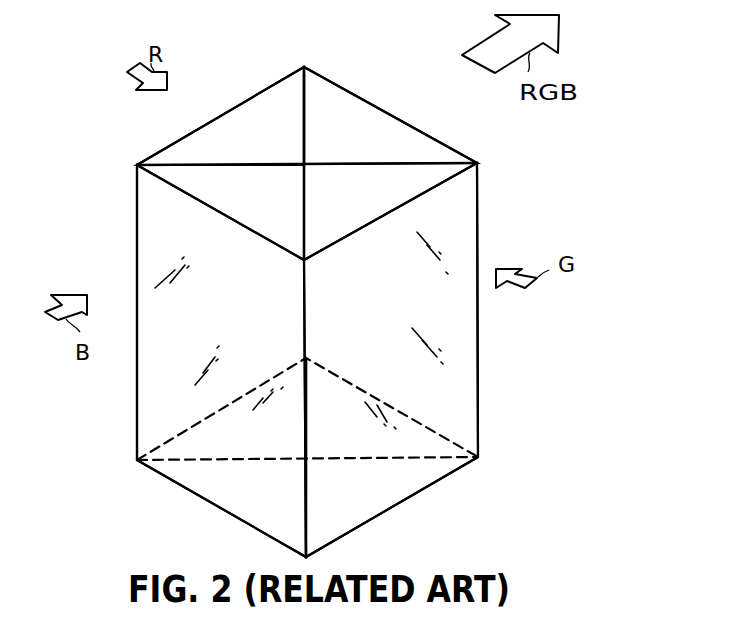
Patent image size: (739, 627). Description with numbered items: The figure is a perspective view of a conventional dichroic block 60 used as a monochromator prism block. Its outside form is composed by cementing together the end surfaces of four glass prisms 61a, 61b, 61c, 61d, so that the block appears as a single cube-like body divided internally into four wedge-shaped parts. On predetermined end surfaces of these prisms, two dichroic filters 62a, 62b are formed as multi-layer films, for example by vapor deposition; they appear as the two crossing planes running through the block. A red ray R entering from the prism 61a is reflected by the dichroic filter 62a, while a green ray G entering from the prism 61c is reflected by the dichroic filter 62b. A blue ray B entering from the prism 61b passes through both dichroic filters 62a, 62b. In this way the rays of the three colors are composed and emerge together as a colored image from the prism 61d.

The dichroic block 60 is at (618, 447).
The prism 61a is at (262, 108).
The prism 61b is at (155, 220).
The prism 61c is at (465, 197).
The prism 61d is at (433, 153).
The dichroic filter 62a is at (223, 165).
The dichroic filter 62b is at (307, 113).